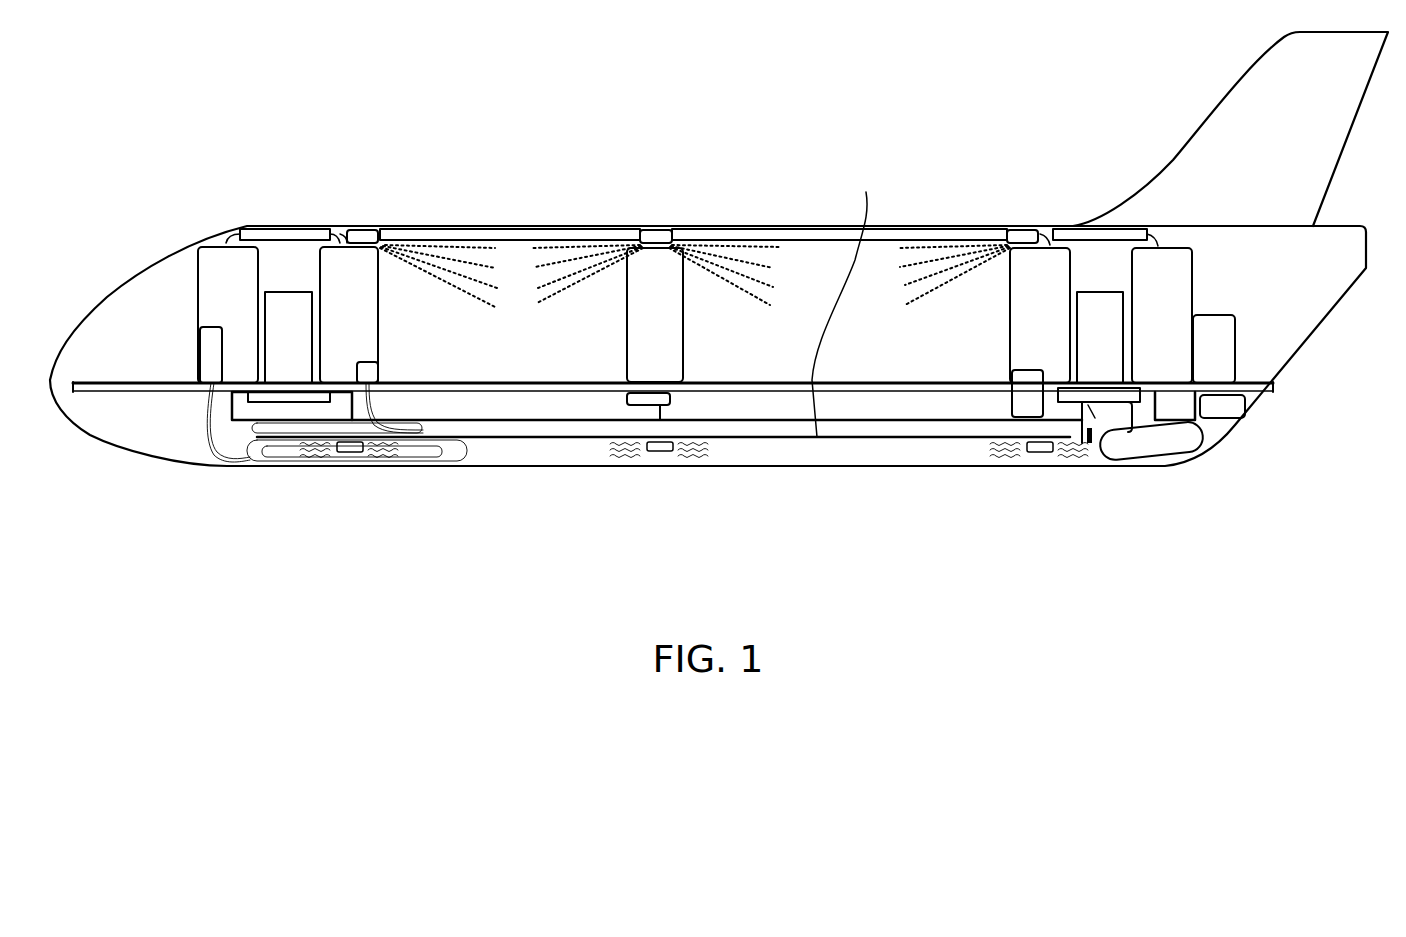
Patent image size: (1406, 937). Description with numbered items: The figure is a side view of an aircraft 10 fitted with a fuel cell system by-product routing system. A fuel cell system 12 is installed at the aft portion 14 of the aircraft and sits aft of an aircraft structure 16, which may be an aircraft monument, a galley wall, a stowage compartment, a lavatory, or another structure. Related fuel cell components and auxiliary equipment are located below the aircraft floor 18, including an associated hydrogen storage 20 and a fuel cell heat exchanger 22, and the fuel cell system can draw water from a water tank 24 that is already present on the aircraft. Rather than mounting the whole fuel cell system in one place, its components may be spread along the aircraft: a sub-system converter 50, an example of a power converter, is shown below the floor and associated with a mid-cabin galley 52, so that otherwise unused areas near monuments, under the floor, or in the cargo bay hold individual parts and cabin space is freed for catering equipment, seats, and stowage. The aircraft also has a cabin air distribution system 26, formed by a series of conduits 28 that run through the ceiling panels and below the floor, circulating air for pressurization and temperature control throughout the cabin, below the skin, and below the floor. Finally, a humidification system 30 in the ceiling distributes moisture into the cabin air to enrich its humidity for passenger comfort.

The aircraft 10 is at (788, 156).
The fuel cell system 12 is at (1220, 352).
The aft portion 14 is at (1173, 474).
The aircraft structure 16 is at (1148, 326).
The aircraft floor 18 is at (80, 382).
The hydrogen storage 20 is at (1017, 398).
The fuel cell heat exchanger 22 is at (1073, 405).
The water tank 24 is at (1138, 447).
The cabin air distribution system 26 is at (813, 227).
The conduits 28 is at (507, 438).
The humidification system 30 is at (658, 231).
The sub-system converter 50 is at (637, 397).
The mid-cabin galley 52 is at (641, 326).